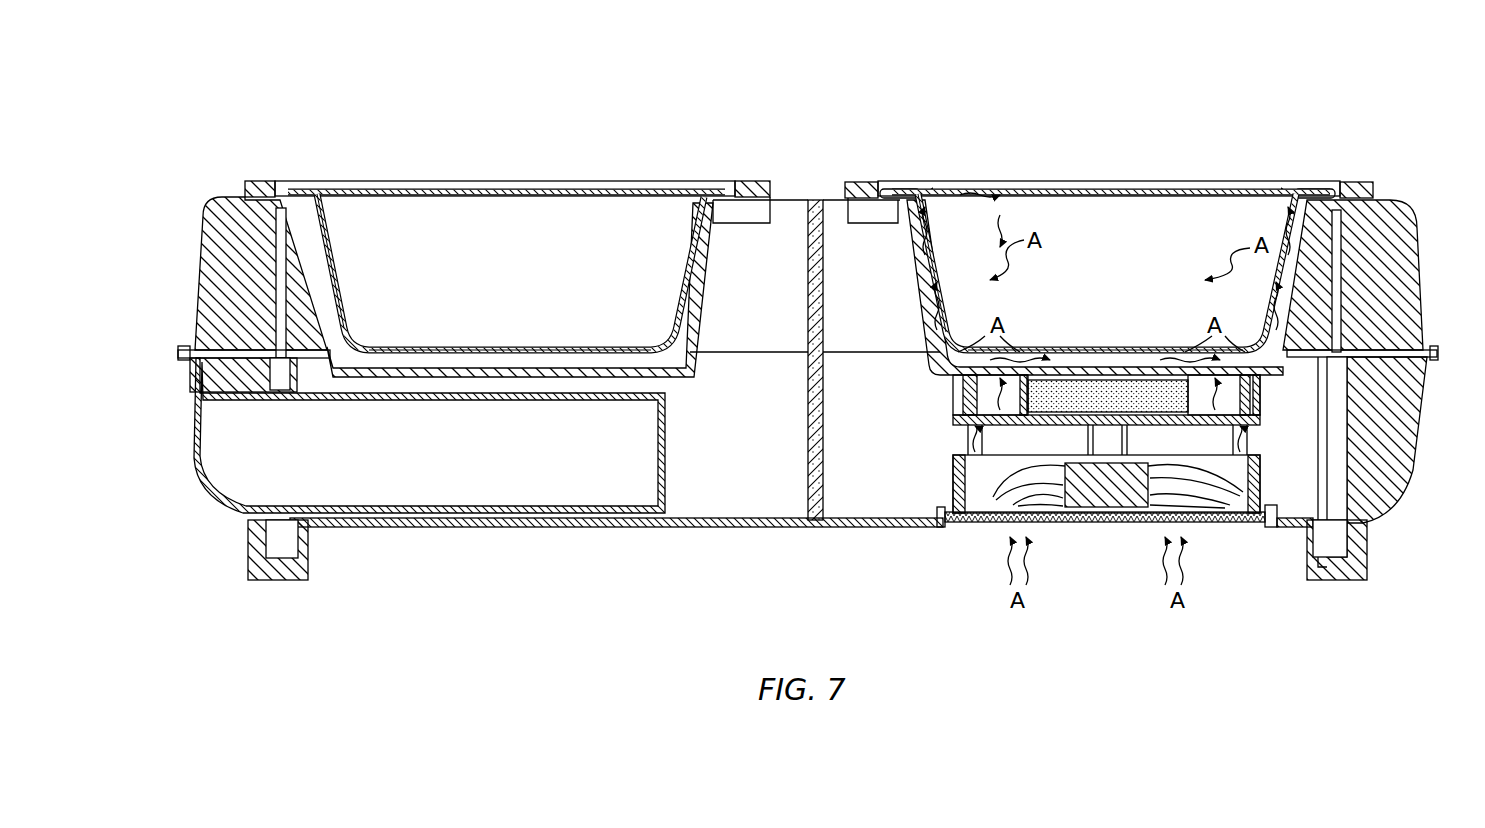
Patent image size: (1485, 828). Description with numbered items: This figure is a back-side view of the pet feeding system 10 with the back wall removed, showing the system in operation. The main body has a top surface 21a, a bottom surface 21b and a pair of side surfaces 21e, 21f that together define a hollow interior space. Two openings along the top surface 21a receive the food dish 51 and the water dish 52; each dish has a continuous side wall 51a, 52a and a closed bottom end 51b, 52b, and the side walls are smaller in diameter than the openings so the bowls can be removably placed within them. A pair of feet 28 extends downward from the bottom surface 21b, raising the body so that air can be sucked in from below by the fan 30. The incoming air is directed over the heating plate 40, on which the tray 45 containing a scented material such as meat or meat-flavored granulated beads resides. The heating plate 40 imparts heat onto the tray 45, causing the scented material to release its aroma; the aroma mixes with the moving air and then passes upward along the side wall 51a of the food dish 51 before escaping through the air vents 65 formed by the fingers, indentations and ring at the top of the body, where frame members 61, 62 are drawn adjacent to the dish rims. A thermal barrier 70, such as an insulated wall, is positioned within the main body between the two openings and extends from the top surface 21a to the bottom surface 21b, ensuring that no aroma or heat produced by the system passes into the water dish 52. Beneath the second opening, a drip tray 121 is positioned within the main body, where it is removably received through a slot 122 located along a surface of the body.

The pet feeding system 10 is at (246, 120).
The top surface 21a is at (815, 198).
The bottom surface 21b is at (770, 530).
The side surface 21e is at (192, 290).
The side surface 21f is at (1420, 238).
The feet 28 is at (290, 585).
The fan 30 is at (1115, 495).
The heating plate 40 is at (1048, 426).
The tray 45 is at (1125, 383).
The dish 51 is at (1100, 175).
The side wall 51a is at (935, 265).
The closed bottom end 51b is at (1112, 345).
The dish 52 is at (450, 176).
The side wall 52a is at (350, 268).
The closed bottom end 52b is at (505, 342).
The frame member 61 is at (1355, 180).
The frame member 62 is at (748, 180).
The air vents 65 is at (958, 190).
The thermal barrier 70 is at (806, 415).
The drip tray 121 is at (228, 465).
The slot 122 is at (186, 357).